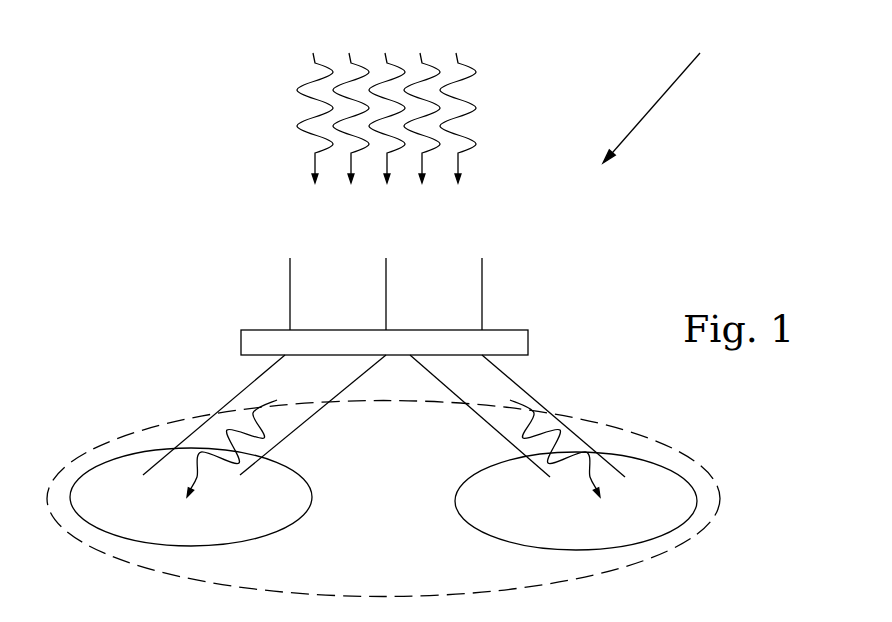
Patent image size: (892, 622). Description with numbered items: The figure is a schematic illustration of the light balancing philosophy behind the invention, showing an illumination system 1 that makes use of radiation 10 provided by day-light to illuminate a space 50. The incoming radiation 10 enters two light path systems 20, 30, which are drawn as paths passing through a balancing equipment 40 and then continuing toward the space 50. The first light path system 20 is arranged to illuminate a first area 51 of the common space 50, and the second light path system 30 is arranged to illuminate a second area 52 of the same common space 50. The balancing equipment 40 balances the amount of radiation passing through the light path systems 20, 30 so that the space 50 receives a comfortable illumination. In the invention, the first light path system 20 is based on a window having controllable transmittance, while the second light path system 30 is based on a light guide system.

The illumination system 1 is at (662, 94).
The radiation 10 is at (470, 99).
The first light path system 20 is at (472, 293).
The second light path system 30 is at (297, 290).
The balancing equipment 40 is at (250, 340).
The space 50 is at (133, 440).
The first area 51 is at (467, 508).
The second area 52 is at (270, 518).